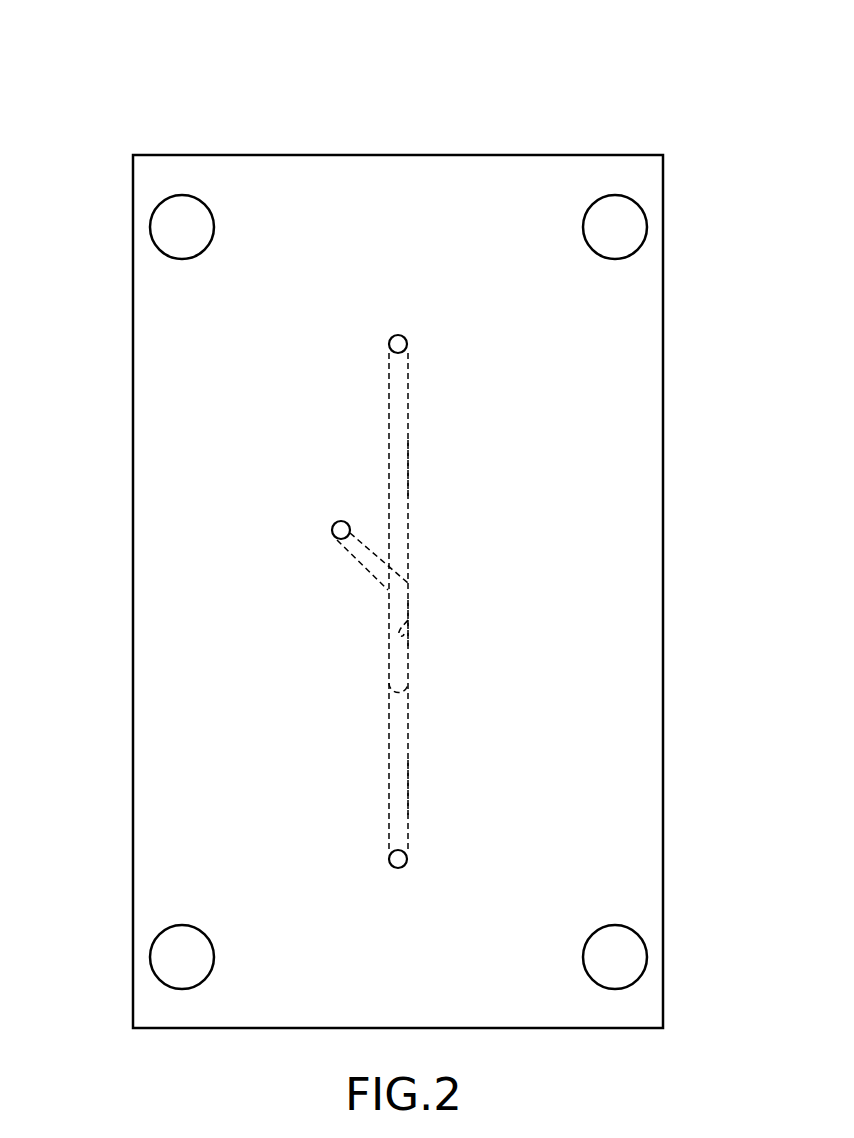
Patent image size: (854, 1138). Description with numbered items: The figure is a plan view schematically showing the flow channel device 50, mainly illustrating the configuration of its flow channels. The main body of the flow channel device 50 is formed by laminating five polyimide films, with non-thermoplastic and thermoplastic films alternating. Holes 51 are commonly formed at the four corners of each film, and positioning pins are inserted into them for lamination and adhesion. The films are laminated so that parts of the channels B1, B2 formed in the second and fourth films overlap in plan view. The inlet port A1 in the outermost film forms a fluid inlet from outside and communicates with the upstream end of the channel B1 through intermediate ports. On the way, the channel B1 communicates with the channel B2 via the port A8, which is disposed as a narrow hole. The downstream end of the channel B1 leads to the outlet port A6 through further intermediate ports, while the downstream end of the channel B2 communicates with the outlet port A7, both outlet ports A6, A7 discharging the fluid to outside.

The flow channel device 50 is at (385, 92).
The holes 51 is at (180, 227).
The outlet port A7 is at (407, 342).
The inlet port A1 is at (407, 857).
The outlet port A6 is at (333, 527).
The channel B2 is at (408, 469).
The port A8 is at (408, 620).
The channel B1 is at (408, 787).